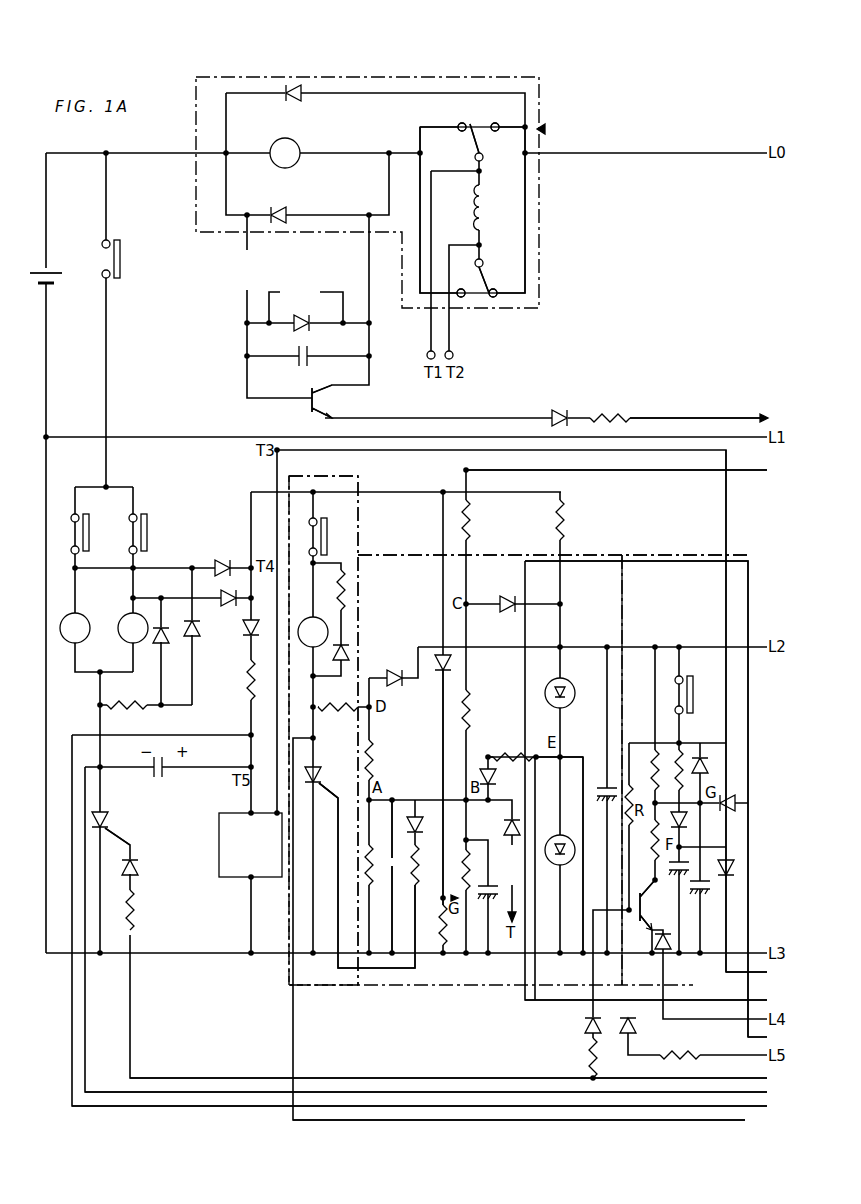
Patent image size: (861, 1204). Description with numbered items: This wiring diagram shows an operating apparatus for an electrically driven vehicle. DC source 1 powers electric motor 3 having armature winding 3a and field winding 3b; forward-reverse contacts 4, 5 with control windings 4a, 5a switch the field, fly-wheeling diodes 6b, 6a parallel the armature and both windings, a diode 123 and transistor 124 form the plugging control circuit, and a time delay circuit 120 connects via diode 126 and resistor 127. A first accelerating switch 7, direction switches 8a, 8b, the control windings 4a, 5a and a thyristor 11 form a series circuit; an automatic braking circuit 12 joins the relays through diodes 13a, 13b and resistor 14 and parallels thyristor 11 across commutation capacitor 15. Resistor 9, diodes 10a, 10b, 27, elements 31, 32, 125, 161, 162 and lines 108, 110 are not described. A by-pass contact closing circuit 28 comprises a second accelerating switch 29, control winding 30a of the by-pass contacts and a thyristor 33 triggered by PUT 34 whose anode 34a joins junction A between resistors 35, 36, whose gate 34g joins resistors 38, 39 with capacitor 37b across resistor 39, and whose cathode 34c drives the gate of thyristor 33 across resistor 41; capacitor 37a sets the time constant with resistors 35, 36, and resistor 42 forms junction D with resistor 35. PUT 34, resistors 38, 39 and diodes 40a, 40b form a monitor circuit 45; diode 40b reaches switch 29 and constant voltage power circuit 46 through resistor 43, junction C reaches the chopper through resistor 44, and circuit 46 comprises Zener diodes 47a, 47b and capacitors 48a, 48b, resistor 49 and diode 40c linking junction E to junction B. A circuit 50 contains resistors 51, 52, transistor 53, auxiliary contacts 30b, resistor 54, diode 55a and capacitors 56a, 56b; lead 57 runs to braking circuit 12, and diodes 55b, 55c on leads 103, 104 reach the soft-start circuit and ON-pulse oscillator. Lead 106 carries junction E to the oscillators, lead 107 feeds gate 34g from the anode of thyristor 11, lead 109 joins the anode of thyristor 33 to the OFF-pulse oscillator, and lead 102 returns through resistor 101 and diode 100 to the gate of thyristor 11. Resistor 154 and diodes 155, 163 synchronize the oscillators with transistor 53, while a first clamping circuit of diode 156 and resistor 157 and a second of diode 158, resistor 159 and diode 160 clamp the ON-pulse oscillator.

The DC source 1 is at (55, 282).
The electric motor 3 is at (545, 128).
The armature winding 3a is at (285, 153).
The field winding 3b is at (484, 212).
The contact 4 is at (490, 118).
The control winding 4a is at (75, 628).
The contact 5 is at (473, 305).
The control winding 5a is at (133, 628).
The fly-wheeling diode 6a is at (298, 100).
The fly-wheeling diode 6b is at (284, 207).
The first accelerating switch 7 is at (109, 262).
The direction switch 8a is at (80, 535).
The direction switch 8b is at (138, 535).
The resistor 9 is at (132, 698).
The diode 10a is at (197, 638).
The diode 10b is at (166, 645).
The thyristor 11 is at (108, 816).
The automatic braking circuit 12 is at (250, 845).
The diode 13a is at (220, 558).
The diode 13b is at (226, 607).
The resistor 14 is at (247, 693).
The commutation capacitor 15 is at (160, 778).
The diode 27 is at (246, 636).
The by-pass contact closing circuit 28 is at (358, 489).
The second accelerating switch 29 is at (318, 537).
The control winding 30a is at (314, 632).
The auxiliary contacts 30b is at (669, 700).
The resistor 31 is at (337, 598).
The diode 32 is at (348, 650).
The thyristor 33 is at (318, 776).
The programmable unijunction transistor 34 is at (420, 815).
The anode 34a is at (398, 790).
The cathode 34c is at (505, 822).
The gate 34g is at (438, 800).
The resistor 35 is at (373, 748).
The resistor 36 is at (372, 885).
The capacitor 37a is at (364, 842).
The capacitor 37b is at (470, 880).
The resistor 38 is at (470, 695).
The resistor 39 is at (447, 940).
The diode 40a is at (390, 670).
The diode 40b is at (505, 596).
The diode 40c is at (508, 748).
The resistor 41 is at (412, 880).
The resistor 42 is at (336, 714).
The resistor 43 is at (564, 520).
The resistor 44 is at (470, 525).
The delay circuit 45 is at (395, 553).
The constant voltage power circuit 46 is at (598, 558).
The Zener diode 47a is at (572, 690).
The Zener diode 47b is at (565, 835).
The capacitor 48a is at (607, 780).
The capacitor 48b is at (565, 869).
The resistor 49 is at (520, 752).
The time delay circuit 50 is at (684, 558).
The resistor 51 is at (651, 760).
The resistor 52 is at (651, 845).
The transistor 53 is at (648, 912).
The resistor 54 is at (633, 790).
The diode 55a is at (687, 820).
The diode 55b is at (733, 860).
The diode 55c is at (732, 796).
The capacitor 56a is at (690, 866).
The capacitor 56b is at (710, 888).
The lead 57 is at (728, 532).
The diode 100 is at (136, 870).
The resistor 101 is at (134, 915).
The lead 102 is at (431, 1096).
The lead 103 is at (727, 938).
The lead 104 is at (762, 1038).
The lead 106 is at (651, 1001).
The lead 107 is at (453, 1079).
The line 108 is at (424, 1113).
The lead 109 is at (527, 1132).
The line 110 is at (621, 482).
The time delay circuit 120 is at (699, 407).
The diode 123 is at (296, 332).
The transistor 124 is at (318, 400).
The capacitor 125 is at (300, 366).
The diode 126 is at (562, 410).
The resistor 127 is at (615, 412).
The resistor 154 is at (690, 1058).
The diode 155 is at (636, 1028).
The diode 156 is at (585, 1027).
The resistor 157 is at (589, 1055).
The diode 158 is at (440, 672).
The resistor 159 is at (683, 748).
The diode 160 is at (706, 768).
The diode 161 is at (494, 780).
The capacitor 162 is at (500, 893).
The diode 163 is at (668, 950).